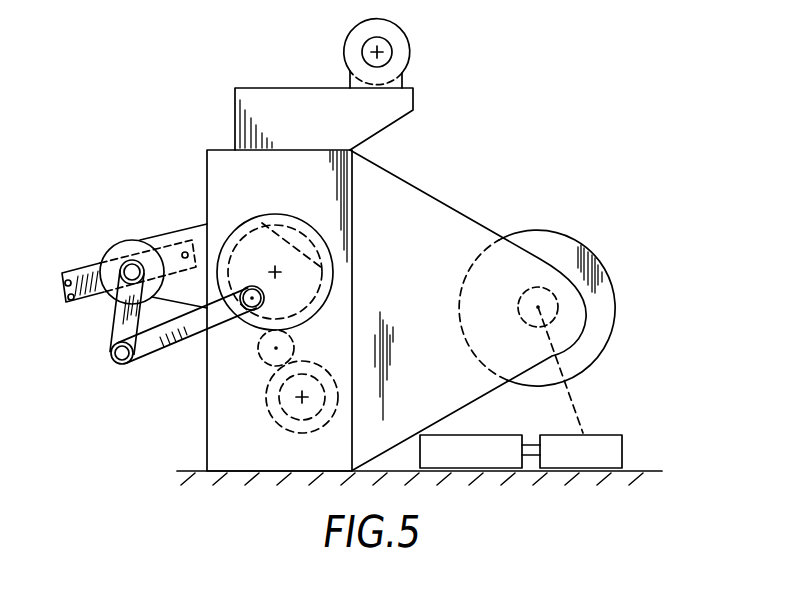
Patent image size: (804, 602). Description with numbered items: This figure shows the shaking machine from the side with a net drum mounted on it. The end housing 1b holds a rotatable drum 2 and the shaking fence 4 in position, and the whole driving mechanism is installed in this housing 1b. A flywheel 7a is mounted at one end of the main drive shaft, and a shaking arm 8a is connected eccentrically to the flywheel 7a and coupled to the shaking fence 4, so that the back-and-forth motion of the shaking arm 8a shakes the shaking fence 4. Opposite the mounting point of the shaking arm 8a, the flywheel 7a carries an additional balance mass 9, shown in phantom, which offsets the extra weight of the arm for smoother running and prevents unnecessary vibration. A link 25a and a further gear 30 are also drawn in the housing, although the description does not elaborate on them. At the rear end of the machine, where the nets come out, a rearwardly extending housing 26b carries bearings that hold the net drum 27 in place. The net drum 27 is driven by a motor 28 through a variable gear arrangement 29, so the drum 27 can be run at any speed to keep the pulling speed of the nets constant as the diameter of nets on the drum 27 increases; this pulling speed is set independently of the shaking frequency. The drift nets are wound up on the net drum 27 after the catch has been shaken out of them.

The end housing 1b is at (213, 462).
The rotatable drum 2 is at (398, 42).
The shaking fence 4 is at (83, 275).
The flywheel 7a is at (258, 216).
The shaking arm 8a is at (172, 342).
The balance mass 9 is at (298, 237).
The connecting rod 25a is at (110, 333).
The rearwardly extending housing 26b is at (453, 223).
The net drum 27 is at (595, 348).
The motor 28 is at (522, 410).
The variable gear arrangement 29 is at (652, 412).
The gear 30 is at (270, 402).